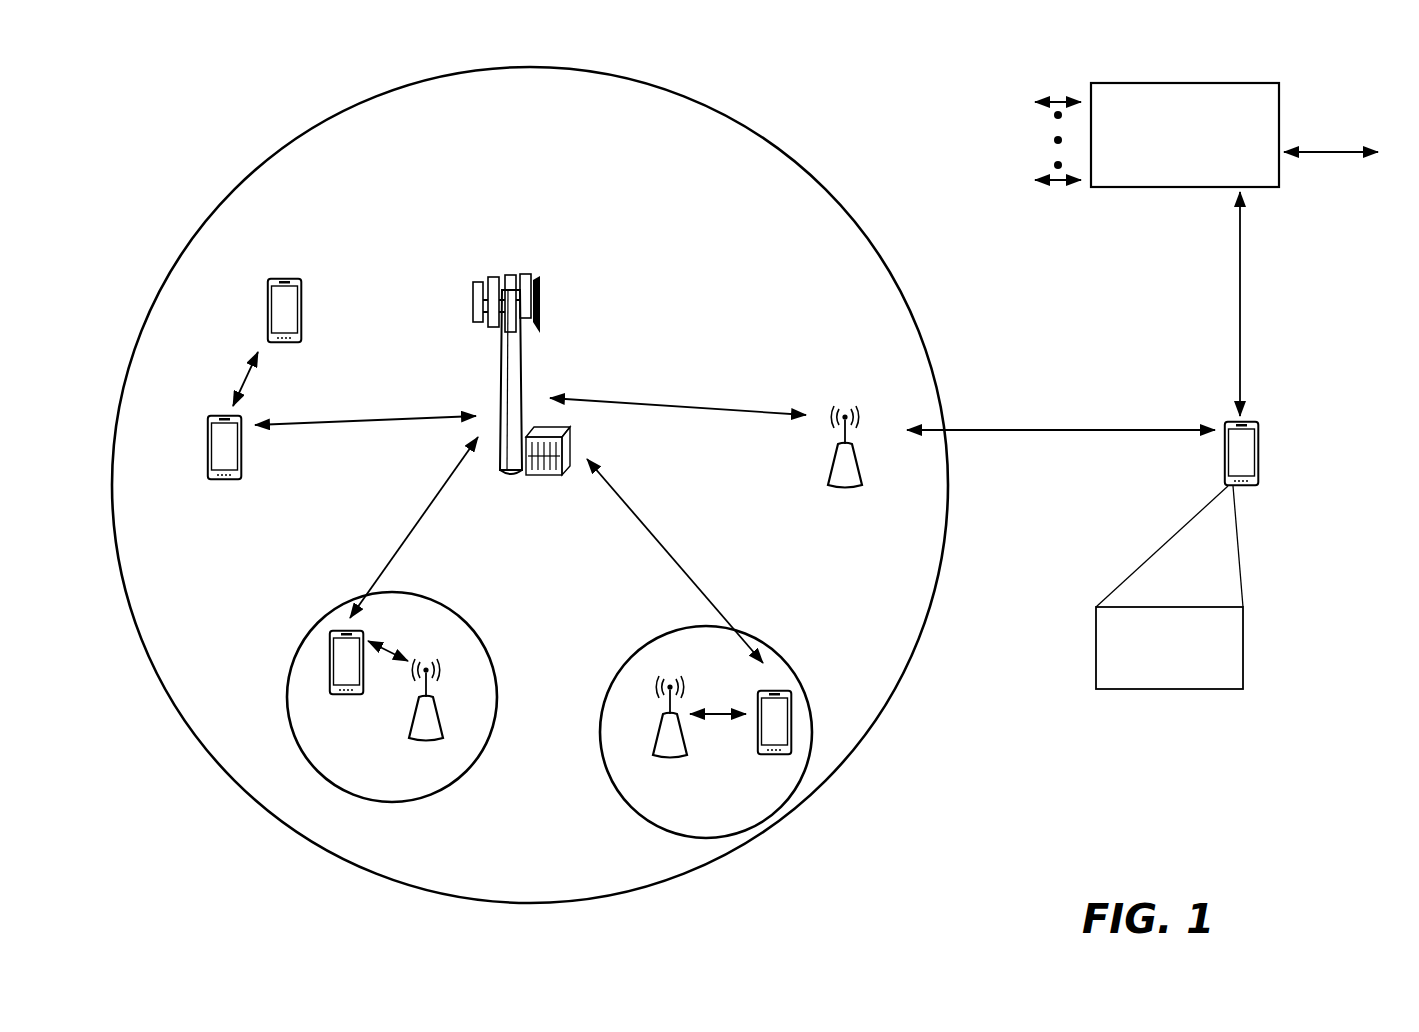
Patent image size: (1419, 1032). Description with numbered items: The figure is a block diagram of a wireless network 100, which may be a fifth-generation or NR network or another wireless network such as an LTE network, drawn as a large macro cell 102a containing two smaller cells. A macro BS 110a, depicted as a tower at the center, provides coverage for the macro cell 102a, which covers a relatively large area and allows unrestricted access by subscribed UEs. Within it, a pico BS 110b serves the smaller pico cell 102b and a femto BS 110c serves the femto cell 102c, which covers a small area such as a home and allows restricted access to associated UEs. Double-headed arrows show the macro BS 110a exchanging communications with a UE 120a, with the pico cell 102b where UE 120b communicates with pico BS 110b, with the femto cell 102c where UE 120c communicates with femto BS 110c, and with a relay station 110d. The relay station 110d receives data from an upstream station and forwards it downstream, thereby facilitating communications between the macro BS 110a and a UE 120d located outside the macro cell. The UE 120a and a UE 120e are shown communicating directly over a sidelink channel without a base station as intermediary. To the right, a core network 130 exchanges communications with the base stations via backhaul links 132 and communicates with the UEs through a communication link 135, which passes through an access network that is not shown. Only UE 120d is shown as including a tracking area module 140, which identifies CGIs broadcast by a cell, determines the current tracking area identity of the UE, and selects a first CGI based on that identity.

The wireless network 100 is at (186, 107).
The macro cell 102a is at (808, 172).
The pico cell 102b is at (482, 640).
The femto cell 102c is at (643, 646).
The macro BS 110a is at (519, 263).
The pico BS 110b is at (448, 725).
The femto BS 110c is at (653, 742).
The relay station 110d is at (847, 405).
The UE 120a is at (206, 445).
The UE 120b is at (336, 696).
The UE 120c is at (757, 757).
The UE 120d is at (1250, 490).
The UE 120e is at (268, 297).
The core network 130 is at (1157, 83).
The backhaul links 132 is at (1057, 96).
The communication link 135 is at (1243, 328).
The tracking area module 140 is at (1170, 690).